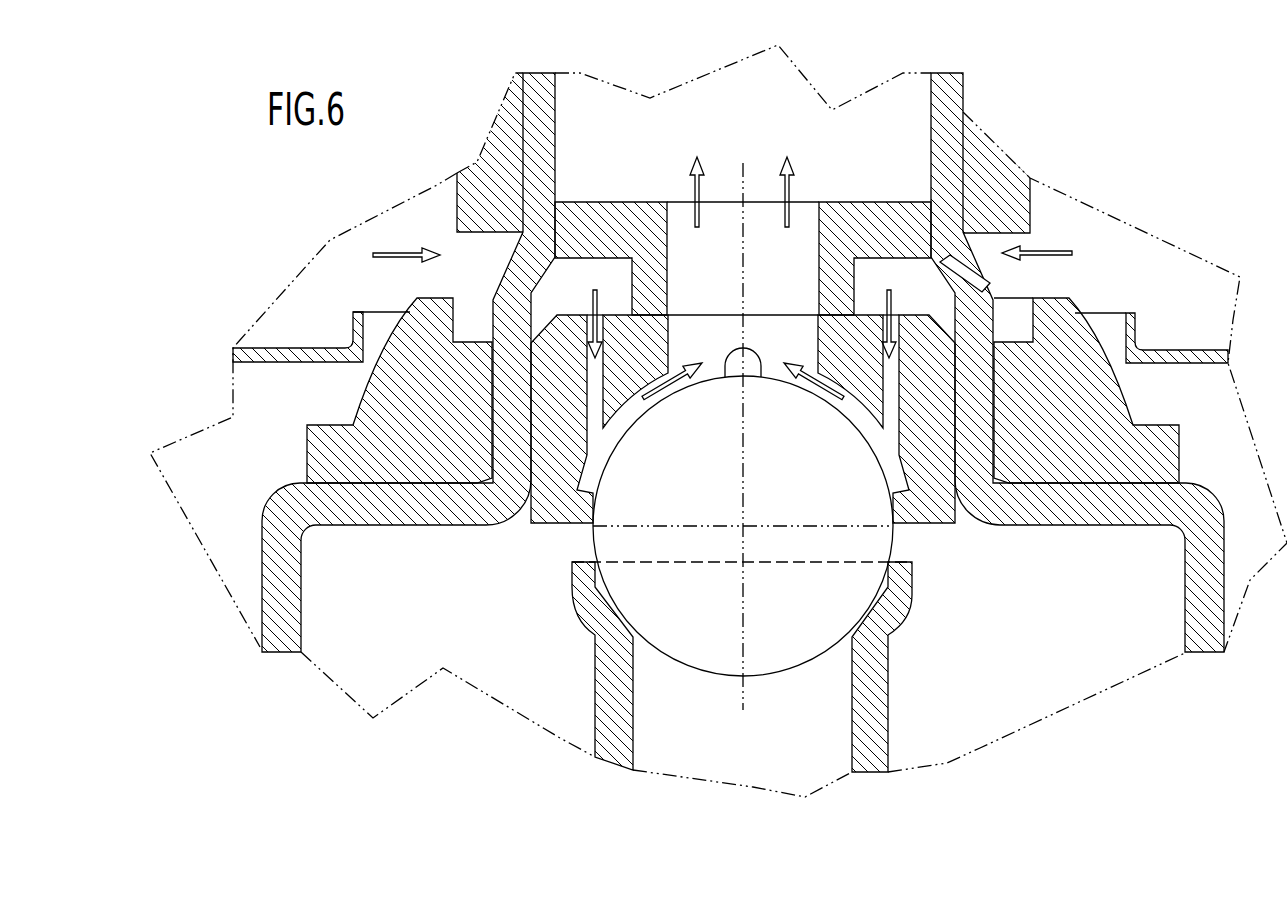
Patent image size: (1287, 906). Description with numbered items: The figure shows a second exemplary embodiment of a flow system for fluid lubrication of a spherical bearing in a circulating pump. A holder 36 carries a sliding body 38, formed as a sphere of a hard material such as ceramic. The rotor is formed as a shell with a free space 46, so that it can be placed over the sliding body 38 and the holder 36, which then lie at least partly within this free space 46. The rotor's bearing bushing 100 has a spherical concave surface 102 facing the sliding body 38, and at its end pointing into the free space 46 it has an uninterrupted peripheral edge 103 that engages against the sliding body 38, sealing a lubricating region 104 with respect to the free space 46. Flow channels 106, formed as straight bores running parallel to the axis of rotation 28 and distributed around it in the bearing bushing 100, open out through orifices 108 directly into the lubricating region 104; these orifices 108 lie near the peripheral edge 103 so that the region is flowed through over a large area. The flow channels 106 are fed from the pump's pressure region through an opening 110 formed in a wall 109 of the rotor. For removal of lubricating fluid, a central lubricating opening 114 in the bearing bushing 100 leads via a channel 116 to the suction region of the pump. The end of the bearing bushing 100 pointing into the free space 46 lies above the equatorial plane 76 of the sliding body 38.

The axis of rotation 28 is at (745, 180).
The holder 36 is at (873, 682).
The sliding body 38 is at (788, 653).
The free space 46 is at (502, 672).
The equatorial plane 76 is at (687, 526).
The bearing bushing 100 is at (868, 335).
The spherical concave surface 102 is at (612, 427).
The peripheral edge 103 is at (892, 508).
The lubricating region 104 is at (887, 413).
The flow channels 106 is at (887, 413).
The orifices 108 is at (875, 465).
The wall 109 is at (973, 315).
The opening 110 is at (968, 270).
The central lubricating opening 114 is at (795, 345).
The channel 116 is at (670, 232).